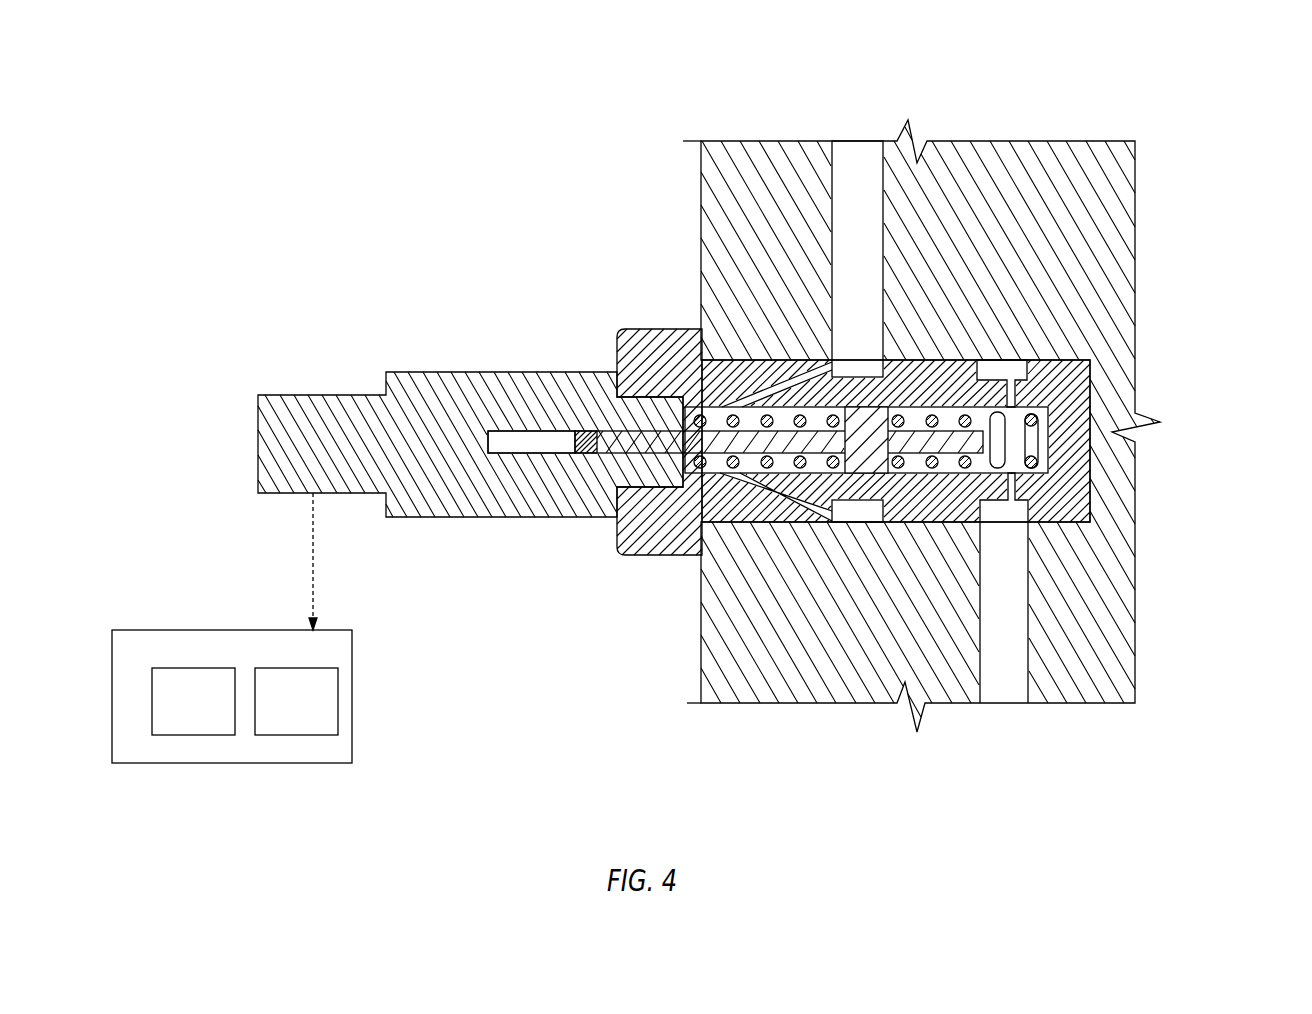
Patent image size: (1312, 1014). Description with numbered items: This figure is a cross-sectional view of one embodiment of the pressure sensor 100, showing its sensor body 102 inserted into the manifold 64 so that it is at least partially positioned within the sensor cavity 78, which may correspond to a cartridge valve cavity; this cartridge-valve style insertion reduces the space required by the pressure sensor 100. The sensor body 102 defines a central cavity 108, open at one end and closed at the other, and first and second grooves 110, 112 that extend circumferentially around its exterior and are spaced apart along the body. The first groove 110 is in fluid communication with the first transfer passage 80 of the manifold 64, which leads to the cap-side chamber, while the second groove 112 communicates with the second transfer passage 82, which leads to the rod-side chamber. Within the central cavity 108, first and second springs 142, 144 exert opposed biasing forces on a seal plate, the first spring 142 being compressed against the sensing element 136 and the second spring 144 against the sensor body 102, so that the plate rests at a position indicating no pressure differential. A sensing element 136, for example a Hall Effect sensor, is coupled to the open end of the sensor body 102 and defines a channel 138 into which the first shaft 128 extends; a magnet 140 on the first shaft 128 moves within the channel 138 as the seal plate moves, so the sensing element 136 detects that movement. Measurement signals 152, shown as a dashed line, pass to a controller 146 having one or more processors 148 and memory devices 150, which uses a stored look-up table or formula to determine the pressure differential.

The pressure sensor 100 is at (431, 188).
The manifold 64 is at (1060, 175).
The first transfer passage 80 is at (858, 162).
The second transfer passage 82 is at (1000, 682).
The sensor cavity 78 is at (1090, 391).
The second groove 112 is at (1005, 372).
The first groove 110 is at (863, 508).
The first spring 142 is at (698, 400).
The second spring 144 is at (963, 417).
The central cavity 108 is at (1040, 440).
The sensor body 102 is at (648, 557).
The sensing element 136 is at (418, 370).
The channel 138 is at (533, 445).
The magnet 140 is at (585, 430).
The first shaft 128 is at (605, 457).
The measurement signals 152 is at (313, 587).
The controller 146 is at (232, 743).
The processor 148 is at (177, 713).
The memory device 150 is at (281, 713).